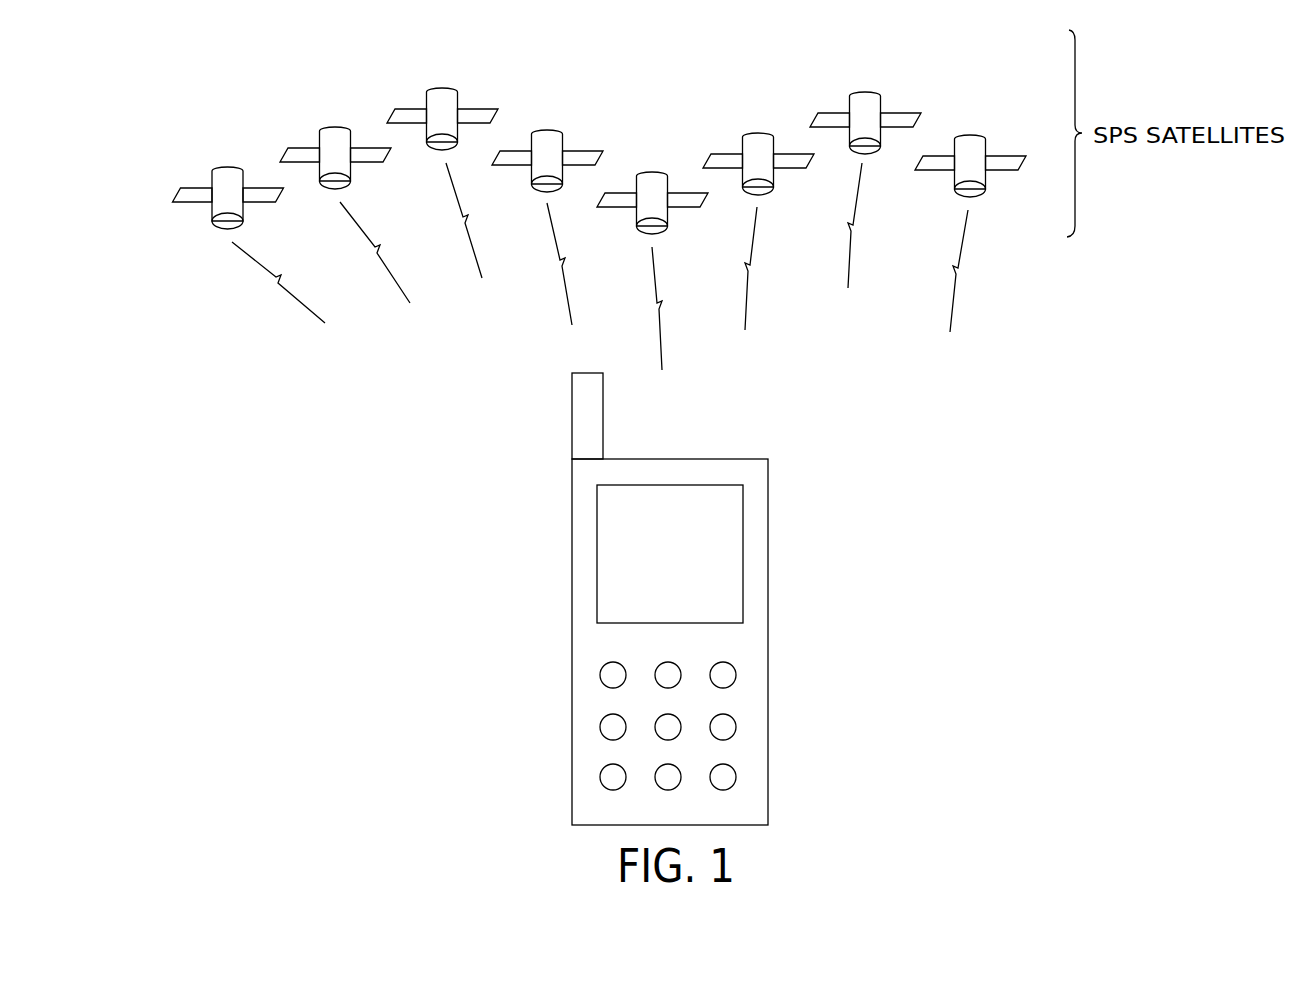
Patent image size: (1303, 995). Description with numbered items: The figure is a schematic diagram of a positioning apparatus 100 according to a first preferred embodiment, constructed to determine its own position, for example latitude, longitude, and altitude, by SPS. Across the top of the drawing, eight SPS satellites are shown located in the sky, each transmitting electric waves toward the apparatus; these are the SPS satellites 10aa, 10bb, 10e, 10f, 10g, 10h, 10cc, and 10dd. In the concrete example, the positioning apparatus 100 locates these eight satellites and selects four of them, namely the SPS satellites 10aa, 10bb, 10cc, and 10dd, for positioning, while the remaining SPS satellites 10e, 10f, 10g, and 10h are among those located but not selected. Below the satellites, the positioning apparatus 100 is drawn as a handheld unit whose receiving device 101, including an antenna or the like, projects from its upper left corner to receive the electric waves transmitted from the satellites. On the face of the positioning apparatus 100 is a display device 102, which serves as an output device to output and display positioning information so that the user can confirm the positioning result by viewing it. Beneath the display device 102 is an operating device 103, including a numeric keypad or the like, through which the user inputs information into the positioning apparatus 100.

The SPS satellite 10aa is at (229, 167).
The SPS satellite 10bb is at (337, 127).
The SPS satellite 10e is at (443, 88).
The SPS satellite 10f is at (552, 130).
The SPS satellite 10g is at (653, 172).
The SPS satellite 10h is at (760, 133).
The SPS satellite 10cc is at (867, 92).
The SPS satellite 10dd is at (972, 135).
The positioning apparatus 100 is at (705, 598).
The receiving device 101 is at (566, 431).
The display device 102 is at (743, 550).
The operating device 103 is at (741, 657).